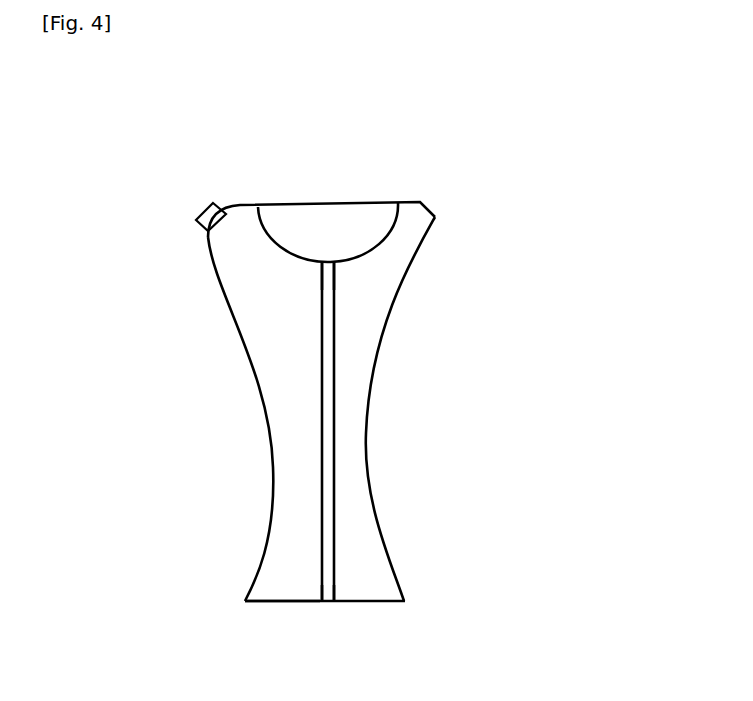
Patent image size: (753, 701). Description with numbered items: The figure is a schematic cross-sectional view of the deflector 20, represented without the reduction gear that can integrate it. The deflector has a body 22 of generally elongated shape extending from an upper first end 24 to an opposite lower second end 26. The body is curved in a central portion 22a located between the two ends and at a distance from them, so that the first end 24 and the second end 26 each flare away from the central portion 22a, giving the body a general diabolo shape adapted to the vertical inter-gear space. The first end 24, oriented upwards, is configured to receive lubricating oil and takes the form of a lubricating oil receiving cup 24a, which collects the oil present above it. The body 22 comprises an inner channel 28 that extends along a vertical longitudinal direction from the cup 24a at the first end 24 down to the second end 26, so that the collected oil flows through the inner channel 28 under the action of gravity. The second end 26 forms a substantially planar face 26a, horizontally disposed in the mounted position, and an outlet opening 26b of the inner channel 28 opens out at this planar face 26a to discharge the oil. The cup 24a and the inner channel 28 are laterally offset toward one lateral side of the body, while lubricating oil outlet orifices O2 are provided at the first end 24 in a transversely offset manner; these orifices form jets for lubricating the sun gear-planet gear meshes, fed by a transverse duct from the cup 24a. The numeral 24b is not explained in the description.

The deflector 20 is at (476, 247).
The body 22 is at (393, 300).
The central portion 22a is at (374, 433).
The first end 24 is at (408, 181).
The lubricating oil receiving cup 24a is at (347, 220).
The slot inlet 24b is at (321, 256).
The second end 26 is at (391, 611).
The planar face 26a is at (277, 603).
The outlet opening 26b is at (333, 609).
The inner channel 28 is at (340, 493).
The lubricating oil outlet orifices O2 is at (200, 212).